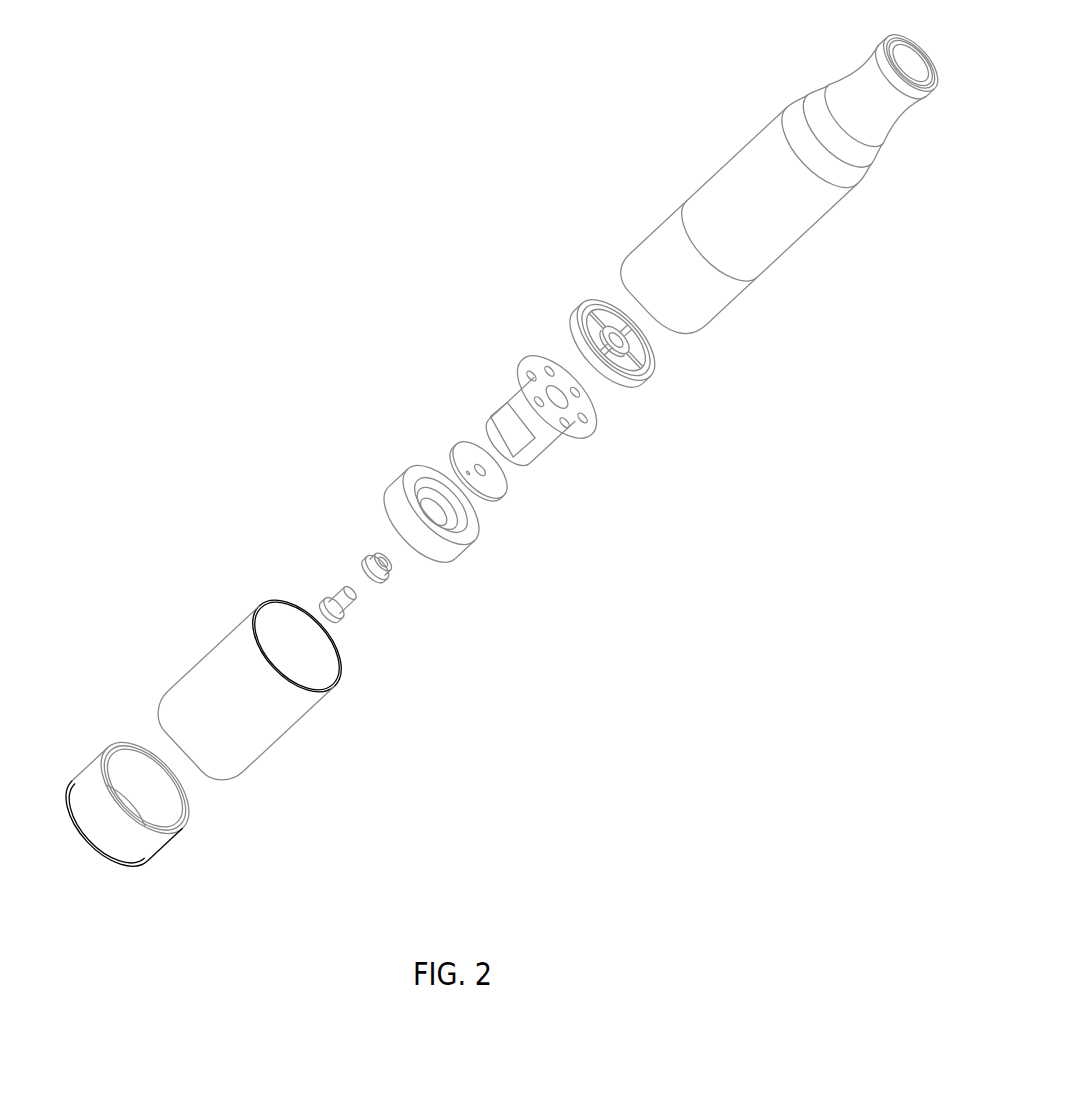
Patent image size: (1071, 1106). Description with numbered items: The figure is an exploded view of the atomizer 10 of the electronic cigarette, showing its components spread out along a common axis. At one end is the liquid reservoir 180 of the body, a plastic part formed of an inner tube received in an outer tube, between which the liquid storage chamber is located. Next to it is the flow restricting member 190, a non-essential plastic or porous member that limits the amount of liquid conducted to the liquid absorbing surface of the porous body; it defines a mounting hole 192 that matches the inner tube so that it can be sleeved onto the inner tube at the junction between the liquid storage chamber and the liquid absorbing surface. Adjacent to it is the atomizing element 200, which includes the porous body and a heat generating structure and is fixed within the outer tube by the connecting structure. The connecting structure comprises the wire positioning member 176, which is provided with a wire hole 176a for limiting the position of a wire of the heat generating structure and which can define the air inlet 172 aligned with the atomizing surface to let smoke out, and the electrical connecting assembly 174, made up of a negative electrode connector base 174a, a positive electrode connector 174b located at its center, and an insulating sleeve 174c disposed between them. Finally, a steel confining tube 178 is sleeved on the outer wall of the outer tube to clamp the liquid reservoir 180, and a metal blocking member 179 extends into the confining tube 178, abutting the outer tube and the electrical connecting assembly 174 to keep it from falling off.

The atomizer 10 is at (118, 149).
The liquid reservoir 180 is at (715, 194).
The flow restricting member 190 is at (652, 310).
The mounting hole 192 is at (613, 347).
The atomizing element 200 is at (520, 392).
The wire positioning member 176 is at (527, 470).
The wire hole 176a is at (493, 465).
The air inlet 172 is at (498, 467).
The electrical connecting assembly 174 is at (349, 504).
The negative electrode connector base 174a is at (400, 512).
The positive electrode connector 174b is at (291, 561).
The insulating sleeve 174c is at (368, 562).
The confining tube 178 is at (213, 677).
The blocking member 179 is at (103, 805).